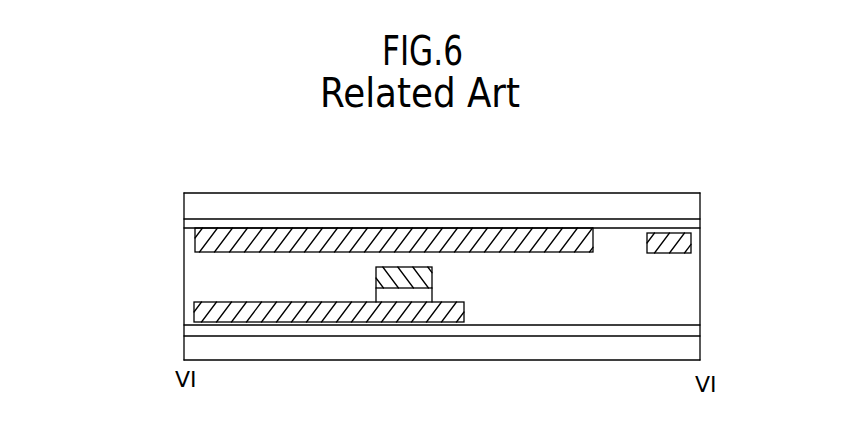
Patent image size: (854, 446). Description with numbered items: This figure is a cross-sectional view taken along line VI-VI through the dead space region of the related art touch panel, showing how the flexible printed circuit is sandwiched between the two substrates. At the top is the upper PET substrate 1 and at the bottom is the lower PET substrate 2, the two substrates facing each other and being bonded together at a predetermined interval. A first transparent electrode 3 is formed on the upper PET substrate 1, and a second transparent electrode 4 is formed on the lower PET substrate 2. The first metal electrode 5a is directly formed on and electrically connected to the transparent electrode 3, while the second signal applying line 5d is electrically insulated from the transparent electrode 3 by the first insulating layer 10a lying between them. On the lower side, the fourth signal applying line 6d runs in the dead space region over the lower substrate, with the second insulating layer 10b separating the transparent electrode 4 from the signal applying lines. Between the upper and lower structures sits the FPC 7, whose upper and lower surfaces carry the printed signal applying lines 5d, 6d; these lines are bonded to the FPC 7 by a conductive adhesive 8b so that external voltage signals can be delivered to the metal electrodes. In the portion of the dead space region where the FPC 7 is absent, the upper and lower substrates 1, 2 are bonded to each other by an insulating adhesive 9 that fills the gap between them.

The upper PET substrate 1 is at (695, 211).
The lower PET substrate 2 is at (693, 348).
The first transparent electrode 3 is at (695, 228).
The second transparent electrode 4 is at (693, 333).
The first metal electrode 5a is at (198, 240).
The second signal applying line 5d is at (690, 246).
The fourth signal applying line 6d is at (198, 310).
The FPC 7 is at (375, 267).
The conductive adhesive 8b is at (420, 296).
The insulating adhesive 9 is at (693, 283).
The first insulating layer 10a is at (670, 233).
The second insulating layer 10b is at (188, 326).